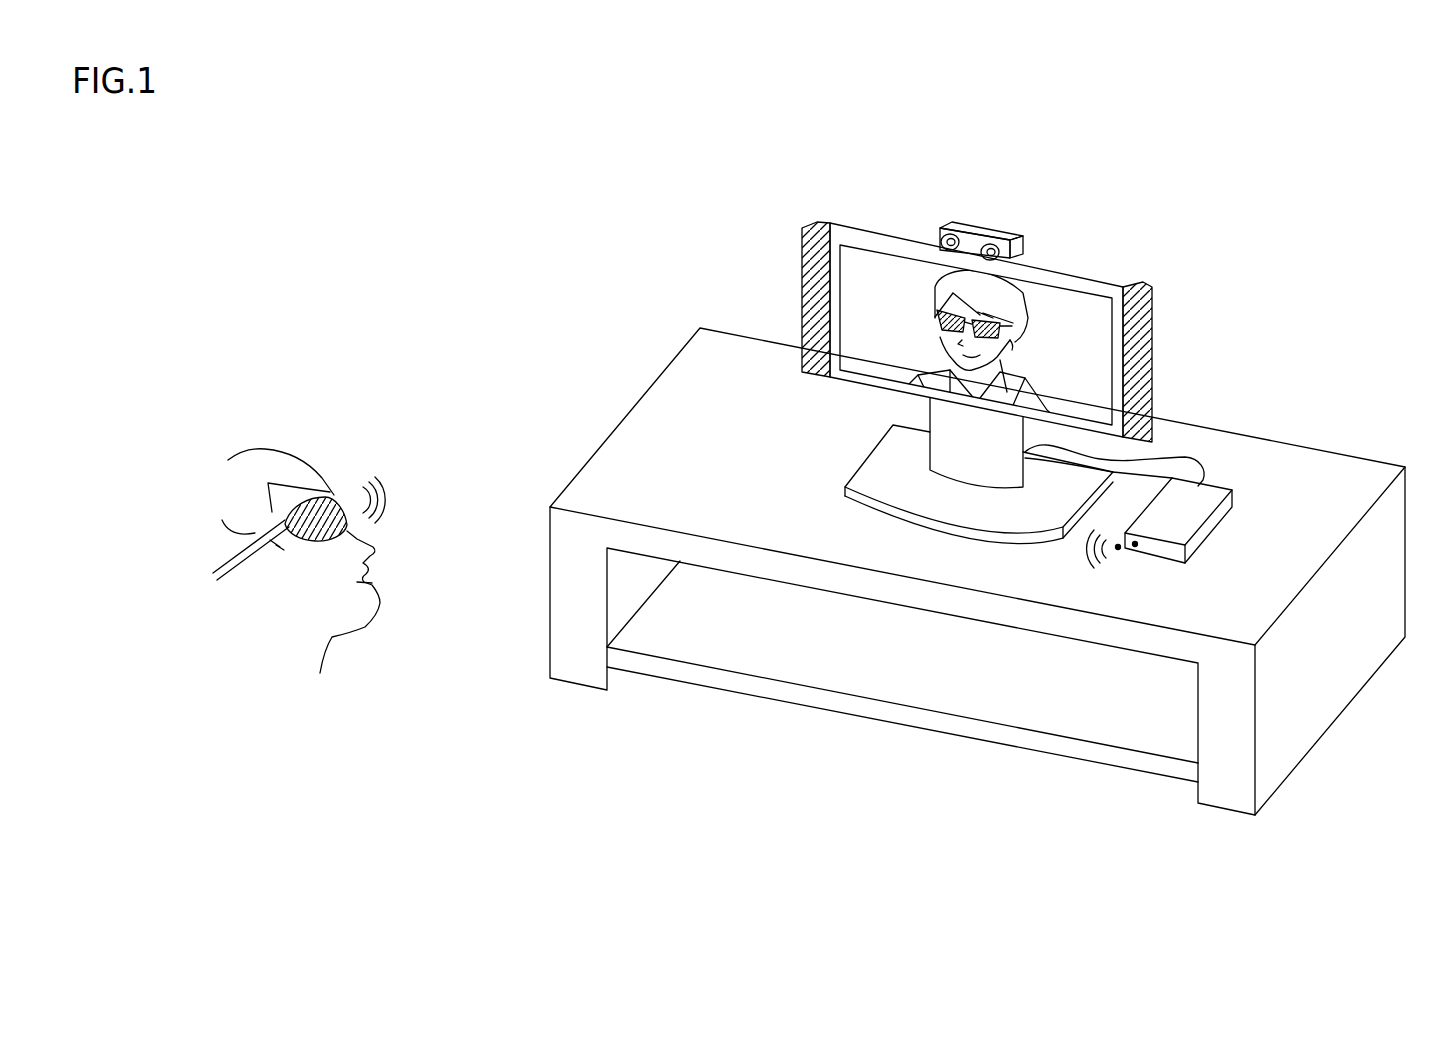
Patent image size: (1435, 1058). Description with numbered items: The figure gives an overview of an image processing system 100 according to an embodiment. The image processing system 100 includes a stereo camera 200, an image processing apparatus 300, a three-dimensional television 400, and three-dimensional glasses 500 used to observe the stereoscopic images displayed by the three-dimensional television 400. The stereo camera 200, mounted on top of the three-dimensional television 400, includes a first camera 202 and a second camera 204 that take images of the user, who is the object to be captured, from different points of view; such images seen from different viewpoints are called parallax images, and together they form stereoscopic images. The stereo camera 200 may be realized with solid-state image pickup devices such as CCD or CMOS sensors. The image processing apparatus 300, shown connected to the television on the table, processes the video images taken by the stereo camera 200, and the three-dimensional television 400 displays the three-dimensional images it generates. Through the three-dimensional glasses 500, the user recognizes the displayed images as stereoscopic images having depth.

The image processing system 100 is at (809, 518).
The stereo camera 200 is at (1012, 237).
The first camera 202 is at (990, 240).
The second camera 204 is at (947, 227).
The image processing apparatus 300 is at (1213, 478).
The 3D television 400 is at (1140, 287).
The 3D glasses 500 is at (337, 497).